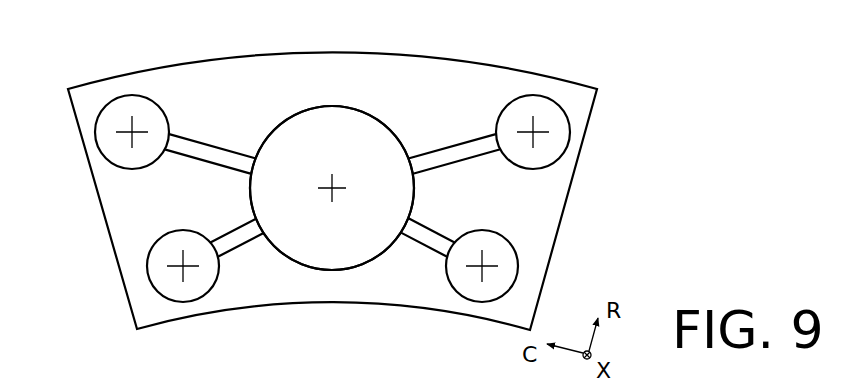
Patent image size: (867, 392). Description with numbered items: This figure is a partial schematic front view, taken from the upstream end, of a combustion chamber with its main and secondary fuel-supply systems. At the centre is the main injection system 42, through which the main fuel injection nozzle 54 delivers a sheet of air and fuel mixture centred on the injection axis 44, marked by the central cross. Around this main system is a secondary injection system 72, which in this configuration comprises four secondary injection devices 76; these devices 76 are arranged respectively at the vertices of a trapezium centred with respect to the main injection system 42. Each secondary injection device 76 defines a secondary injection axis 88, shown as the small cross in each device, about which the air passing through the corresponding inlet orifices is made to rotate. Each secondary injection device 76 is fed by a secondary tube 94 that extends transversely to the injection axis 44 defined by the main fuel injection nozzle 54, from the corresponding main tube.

The injection system 42 is at (380, 116).
The fuel injection nozzle 54 is at (332, 188).
The injection axis 44 is at (335, 182).
The secondary injection system 72 is at (221, 128).
The secondary injection device 76 is at (564, 100).
The secondary injection axis 88 is at (128, 128).
The secondary tube 94 is at (243, 227).